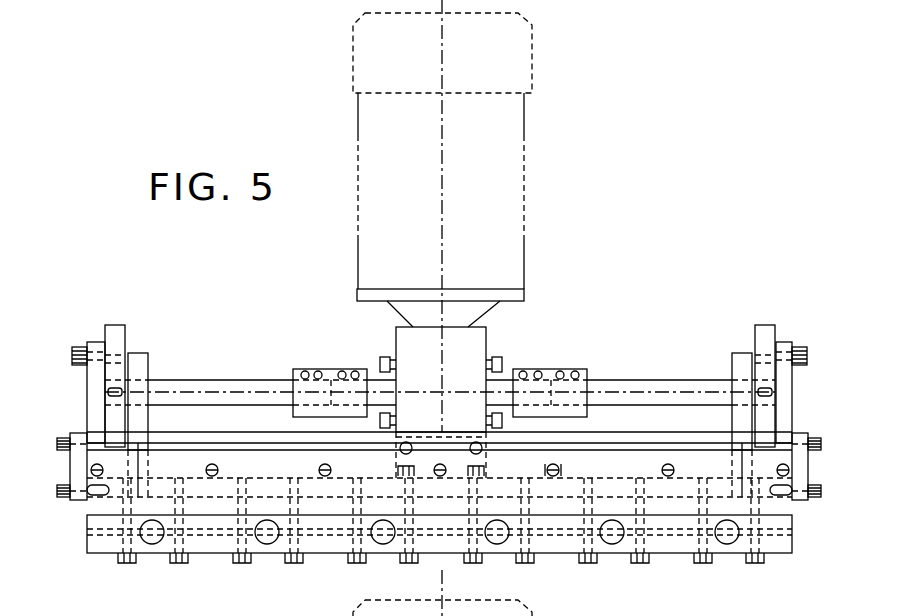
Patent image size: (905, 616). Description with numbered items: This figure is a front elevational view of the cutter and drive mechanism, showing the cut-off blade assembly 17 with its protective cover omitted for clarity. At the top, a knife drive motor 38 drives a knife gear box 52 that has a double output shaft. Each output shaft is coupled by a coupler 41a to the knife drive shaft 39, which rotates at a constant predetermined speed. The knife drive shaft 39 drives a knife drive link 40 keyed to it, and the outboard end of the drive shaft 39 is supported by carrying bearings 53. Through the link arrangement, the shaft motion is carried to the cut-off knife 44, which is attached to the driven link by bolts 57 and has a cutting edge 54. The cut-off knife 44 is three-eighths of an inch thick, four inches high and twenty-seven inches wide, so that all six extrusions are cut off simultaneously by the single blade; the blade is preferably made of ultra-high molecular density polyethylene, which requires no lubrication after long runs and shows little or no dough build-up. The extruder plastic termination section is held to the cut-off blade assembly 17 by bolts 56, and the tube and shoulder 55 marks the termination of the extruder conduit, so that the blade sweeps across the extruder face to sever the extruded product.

The knife drive motor 38 is at (507, 192).
The cut-off blade assembly 17 is at (557, 318).
The knife gear box 52 is at (480, 340).
The knife drive shaft 39 is at (238, 380).
The coupler 41a is at (322, 368).
The knife drive link 40 is at (121, 324).
The carrying bearings 53 is at (150, 358).
The cut-off knife 44 is at (705, 462).
The bolts 57 is at (560, 470).
The cutting edge 54 is at (87, 514).
The tube and shoulder 55 is at (727, 546).
The bolts 56 is at (587, 564).